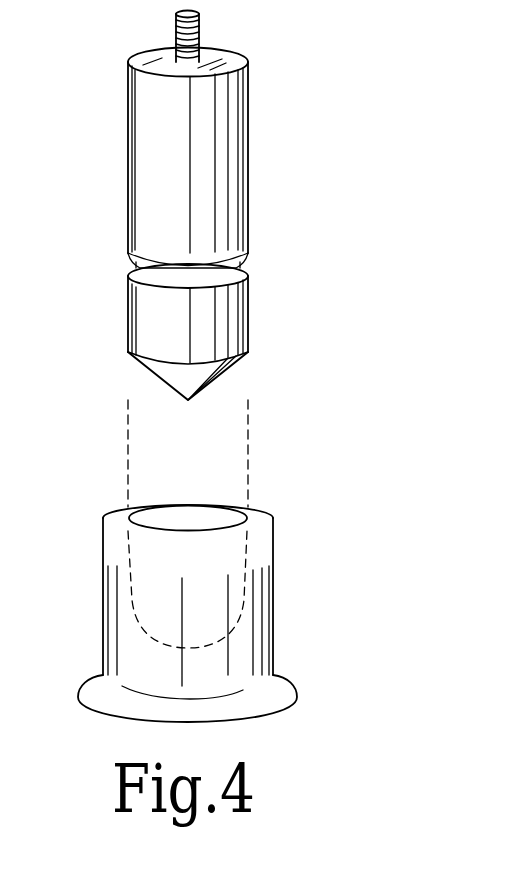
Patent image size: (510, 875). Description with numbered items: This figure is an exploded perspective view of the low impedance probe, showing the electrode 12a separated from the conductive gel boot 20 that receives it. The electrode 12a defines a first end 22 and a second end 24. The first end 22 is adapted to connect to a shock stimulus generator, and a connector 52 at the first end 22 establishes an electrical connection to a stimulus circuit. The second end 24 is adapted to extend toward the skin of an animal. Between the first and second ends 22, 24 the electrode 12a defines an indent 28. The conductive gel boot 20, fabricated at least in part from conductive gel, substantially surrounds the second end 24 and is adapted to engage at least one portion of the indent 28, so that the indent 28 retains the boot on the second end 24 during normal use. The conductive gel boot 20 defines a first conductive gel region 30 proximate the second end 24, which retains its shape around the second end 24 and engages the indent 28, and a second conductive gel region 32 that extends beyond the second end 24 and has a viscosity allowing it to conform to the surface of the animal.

The electrode 12a is at (277, 230).
The connector 52 is at (200, 22).
The first end 22 is at (249, 87).
The indent 28 is at (131, 262).
The second end 24 is at (189, 401).
The conductive gel boot 20 is at (102, 612).
The first conductive gel region 30 is at (261, 560).
The second conductive gel region 32 is at (280, 694).